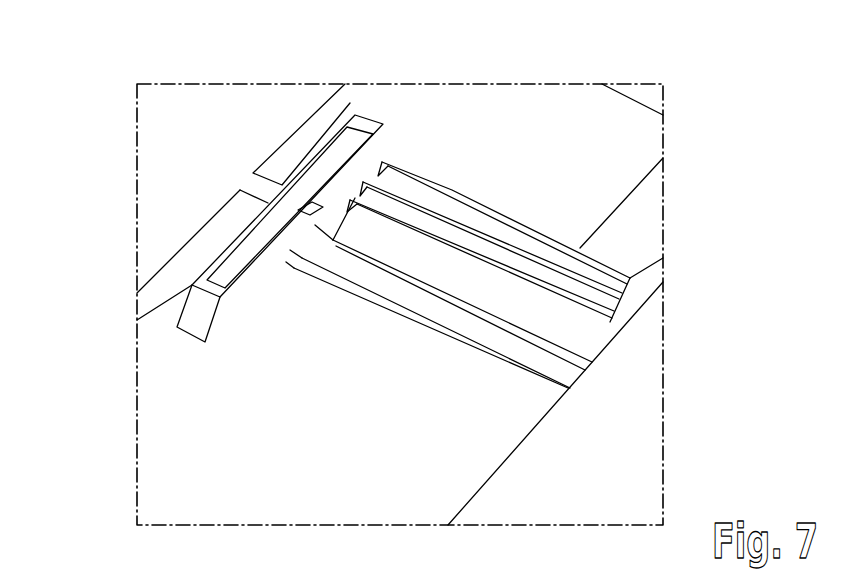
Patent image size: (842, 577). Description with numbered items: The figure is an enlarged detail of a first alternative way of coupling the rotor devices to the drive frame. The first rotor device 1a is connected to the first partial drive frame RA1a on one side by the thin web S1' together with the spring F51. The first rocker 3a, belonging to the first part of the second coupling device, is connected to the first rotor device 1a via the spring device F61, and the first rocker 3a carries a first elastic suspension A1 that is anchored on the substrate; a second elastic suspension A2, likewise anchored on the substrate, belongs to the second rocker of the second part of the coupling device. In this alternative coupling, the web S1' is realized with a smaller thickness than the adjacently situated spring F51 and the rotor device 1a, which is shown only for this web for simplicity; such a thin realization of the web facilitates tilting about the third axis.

The first partial drive frame RA1a is at (160, 160).
The first rocker 3a is at (640, 208).
The first rotor device 1a is at (640, 403).
The spring device F61 is at (512, 222).
The spring F51 is at (350, 103).
The second elastic suspension A2 is at (198, 315).
The first elastic suspension A1 is at (385, 304).
The thin web S1' is at (250, 377).